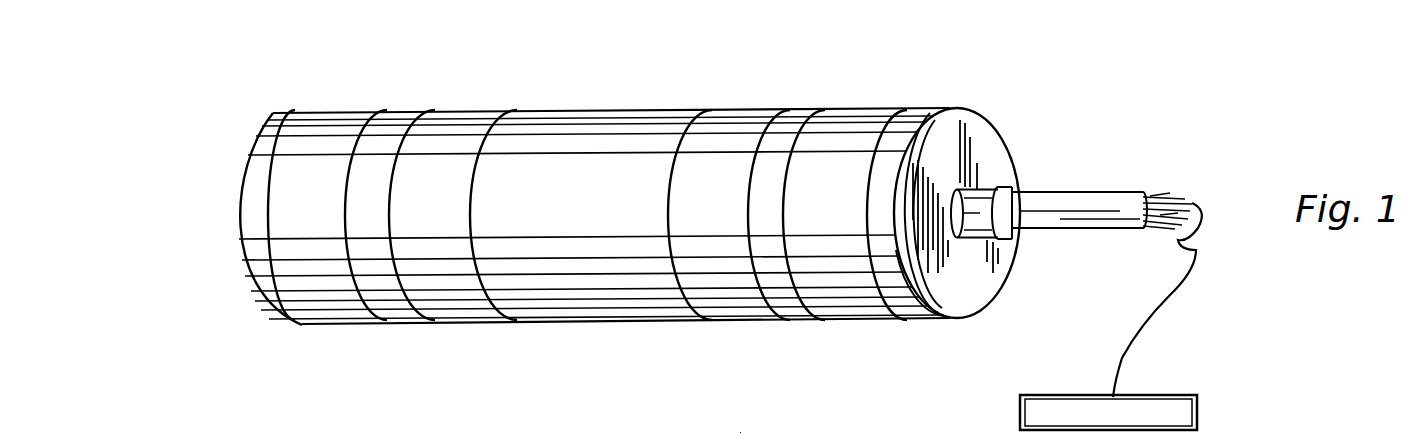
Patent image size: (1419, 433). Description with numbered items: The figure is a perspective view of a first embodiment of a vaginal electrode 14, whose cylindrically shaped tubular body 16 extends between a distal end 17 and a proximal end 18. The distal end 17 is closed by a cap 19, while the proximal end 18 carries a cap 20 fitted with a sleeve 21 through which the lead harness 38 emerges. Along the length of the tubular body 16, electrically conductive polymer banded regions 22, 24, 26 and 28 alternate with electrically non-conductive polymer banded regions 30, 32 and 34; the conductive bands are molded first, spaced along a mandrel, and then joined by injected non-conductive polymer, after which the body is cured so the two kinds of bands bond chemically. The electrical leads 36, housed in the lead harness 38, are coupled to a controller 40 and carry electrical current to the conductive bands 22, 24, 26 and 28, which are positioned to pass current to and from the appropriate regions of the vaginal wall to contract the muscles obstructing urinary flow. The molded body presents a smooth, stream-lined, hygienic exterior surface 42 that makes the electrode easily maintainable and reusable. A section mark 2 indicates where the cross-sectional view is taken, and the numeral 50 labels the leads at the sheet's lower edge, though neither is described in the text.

The section line 2- 2 is at (200, 110).
The vaginal electrode 14 is at (547, 343).
The tubular body 16 is at (886, 108).
The distal end 17 is at (243, 177).
The proximal end 18 is at (977, 105).
The cap 19 is at (263, 163).
The cap 20 is at (902, 318).
The sleeve 21 is at (984, 238).
The conductive polymer band 22 is at (345, 120).
The conductive polymer band 24 is at (468, 115).
The conductive polymer band 26 is at (750, 112).
The conductive polymer band 28 is at (858, 112).
The non-conductive polymer band 30 is at (407, 322).
The non-conductive polymer band 32 is at (602, 322).
The non-conductive polymer band 34 is at (805, 320).
The electrical leads 36 is at (1165, 190).
The lead harness 38 is at (1068, 197).
The controller 40 is at (1153, 395).
The exterior surface 42 is at (592, 112).
The leads 50 is at (808, 425).